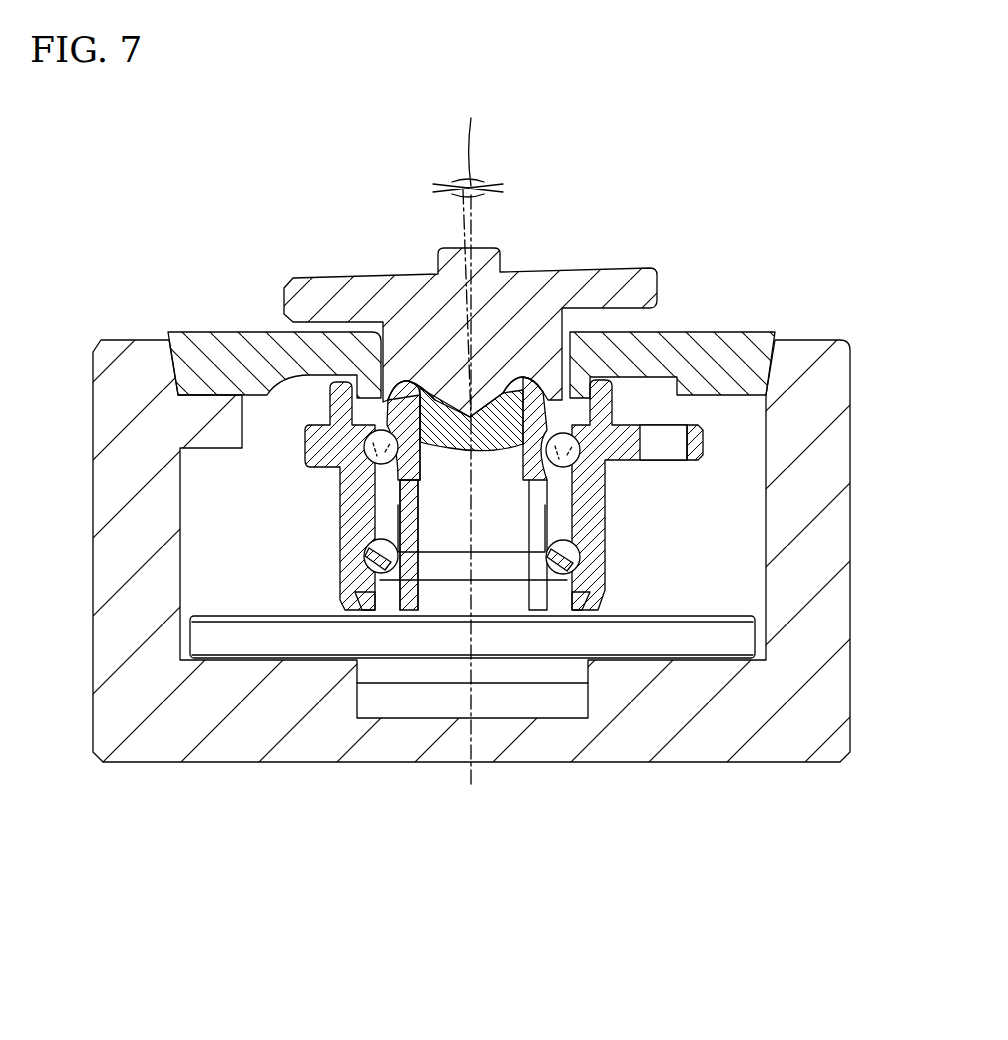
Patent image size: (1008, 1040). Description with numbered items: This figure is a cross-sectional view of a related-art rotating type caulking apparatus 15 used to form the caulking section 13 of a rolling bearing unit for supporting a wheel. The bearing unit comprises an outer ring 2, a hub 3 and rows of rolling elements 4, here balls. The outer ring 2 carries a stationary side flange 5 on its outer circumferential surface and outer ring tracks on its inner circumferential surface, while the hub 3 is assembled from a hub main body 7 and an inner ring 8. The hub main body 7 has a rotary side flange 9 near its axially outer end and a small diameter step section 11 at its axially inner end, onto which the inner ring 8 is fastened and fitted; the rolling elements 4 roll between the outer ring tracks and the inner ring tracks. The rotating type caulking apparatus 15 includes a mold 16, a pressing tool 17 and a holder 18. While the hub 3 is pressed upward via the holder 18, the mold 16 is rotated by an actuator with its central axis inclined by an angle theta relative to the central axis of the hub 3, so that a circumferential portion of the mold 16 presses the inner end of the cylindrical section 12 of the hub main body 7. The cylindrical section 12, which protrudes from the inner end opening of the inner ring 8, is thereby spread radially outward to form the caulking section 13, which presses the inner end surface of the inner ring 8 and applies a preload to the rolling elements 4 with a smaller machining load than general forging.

The outer ring 2 is at (350, 518).
The hub 3 is at (461, 503).
The rolling elements 4 is at (367, 440).
The stationary side flange 5 is at (697, 440).
The hub main body 7 is at (438, 570).
The inner ring 8 is at (577, 401).
The rotary side flange 9 is at (693, 645).
The small diameter step section 11 is at (403, 500).
The cylindrical section 12 is at (426, 400).
The caulking section 13 is at (383, 405).
The rotating type caulking apparatus 15 is at (776, 321).
The mold 16 is at (578, 279).
The pressing tool 17 is at (247, 345).
The holder 18 is at (253, 743).